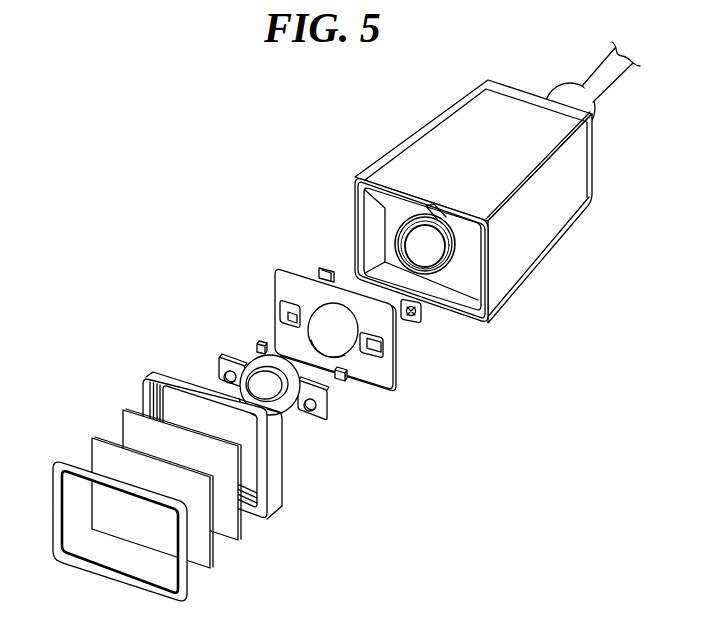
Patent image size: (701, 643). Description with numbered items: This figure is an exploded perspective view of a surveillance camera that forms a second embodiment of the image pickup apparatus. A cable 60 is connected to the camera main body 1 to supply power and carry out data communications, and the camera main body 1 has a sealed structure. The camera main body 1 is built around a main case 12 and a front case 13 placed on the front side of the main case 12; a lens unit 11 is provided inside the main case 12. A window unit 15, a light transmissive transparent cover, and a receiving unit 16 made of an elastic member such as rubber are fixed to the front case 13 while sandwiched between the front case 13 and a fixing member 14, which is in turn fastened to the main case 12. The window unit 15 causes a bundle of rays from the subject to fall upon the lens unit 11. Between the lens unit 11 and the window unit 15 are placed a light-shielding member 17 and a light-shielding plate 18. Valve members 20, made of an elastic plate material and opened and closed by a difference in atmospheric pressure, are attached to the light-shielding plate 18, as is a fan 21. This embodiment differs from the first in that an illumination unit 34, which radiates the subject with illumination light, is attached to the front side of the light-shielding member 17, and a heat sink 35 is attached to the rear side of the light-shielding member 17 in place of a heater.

The camera main body 1 is at (212, 217).
The lens unit 11 is at (413, 240).
The main case 12 is at (413, 145).
The front case 13 is at (152, 375).
The fixing member 14 is at (61, 462).
The window unit 15 is at (92, 438).
The receiving unit 16 is at (122, 410).
The light-shielding member 17 is at (303, 417).
The light-shielding plate 18 is at (388, 390).
The valve members 20 is at (288, 317).
The fan 21 is at (323, 268).
The illumination unit 34 is at (222, 372).
The heat sink 35 is at (258, 347).
The cable 60 is at (617, 77).